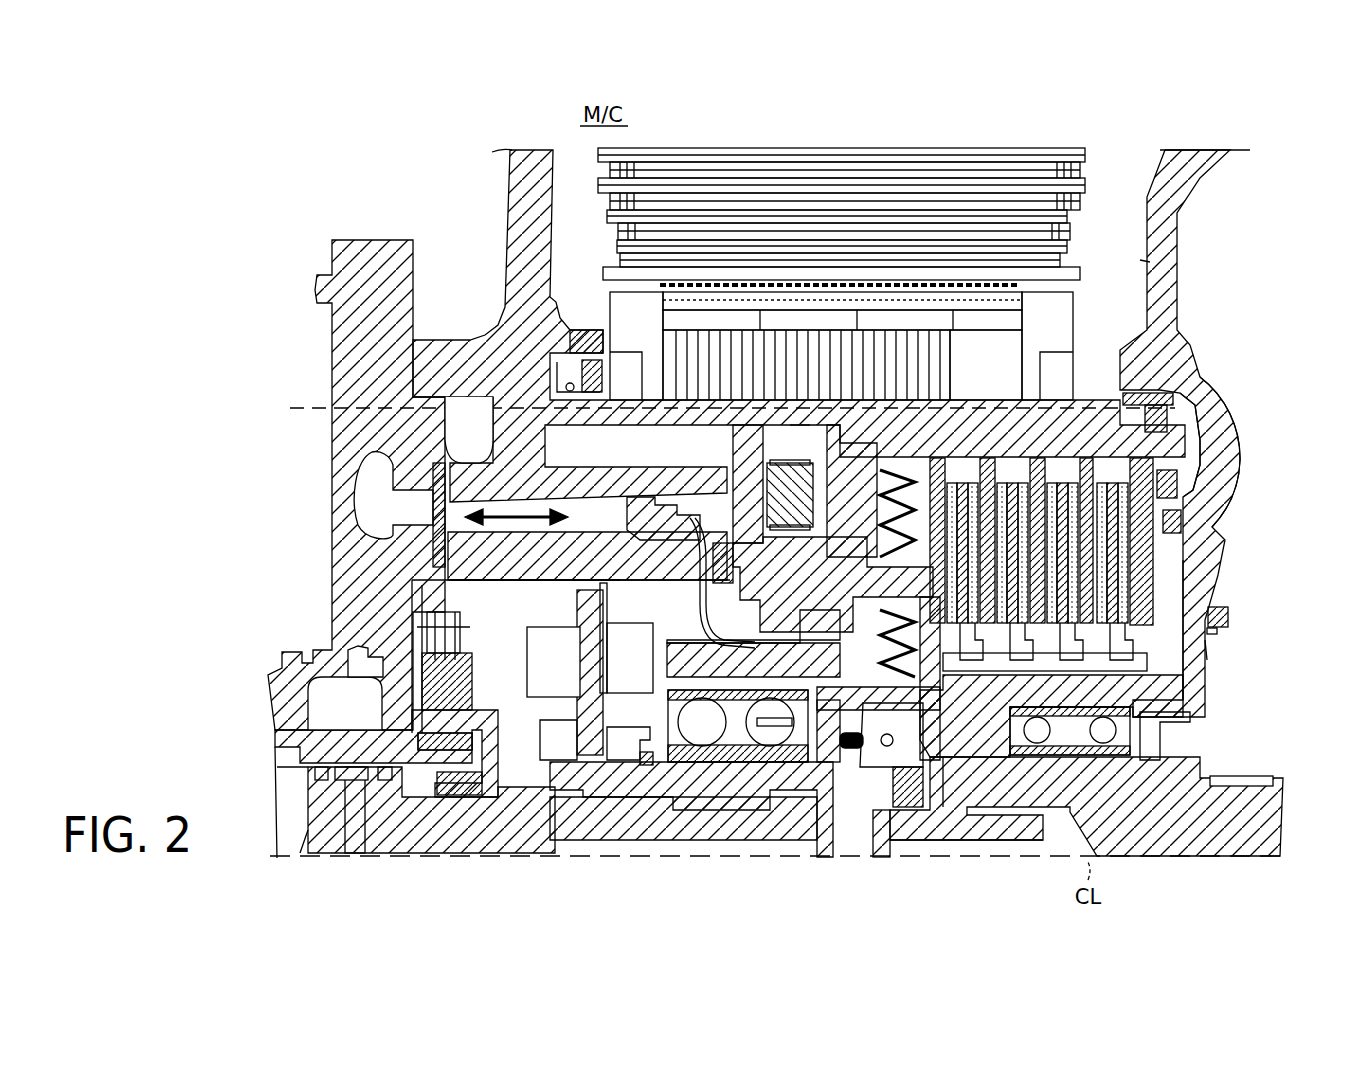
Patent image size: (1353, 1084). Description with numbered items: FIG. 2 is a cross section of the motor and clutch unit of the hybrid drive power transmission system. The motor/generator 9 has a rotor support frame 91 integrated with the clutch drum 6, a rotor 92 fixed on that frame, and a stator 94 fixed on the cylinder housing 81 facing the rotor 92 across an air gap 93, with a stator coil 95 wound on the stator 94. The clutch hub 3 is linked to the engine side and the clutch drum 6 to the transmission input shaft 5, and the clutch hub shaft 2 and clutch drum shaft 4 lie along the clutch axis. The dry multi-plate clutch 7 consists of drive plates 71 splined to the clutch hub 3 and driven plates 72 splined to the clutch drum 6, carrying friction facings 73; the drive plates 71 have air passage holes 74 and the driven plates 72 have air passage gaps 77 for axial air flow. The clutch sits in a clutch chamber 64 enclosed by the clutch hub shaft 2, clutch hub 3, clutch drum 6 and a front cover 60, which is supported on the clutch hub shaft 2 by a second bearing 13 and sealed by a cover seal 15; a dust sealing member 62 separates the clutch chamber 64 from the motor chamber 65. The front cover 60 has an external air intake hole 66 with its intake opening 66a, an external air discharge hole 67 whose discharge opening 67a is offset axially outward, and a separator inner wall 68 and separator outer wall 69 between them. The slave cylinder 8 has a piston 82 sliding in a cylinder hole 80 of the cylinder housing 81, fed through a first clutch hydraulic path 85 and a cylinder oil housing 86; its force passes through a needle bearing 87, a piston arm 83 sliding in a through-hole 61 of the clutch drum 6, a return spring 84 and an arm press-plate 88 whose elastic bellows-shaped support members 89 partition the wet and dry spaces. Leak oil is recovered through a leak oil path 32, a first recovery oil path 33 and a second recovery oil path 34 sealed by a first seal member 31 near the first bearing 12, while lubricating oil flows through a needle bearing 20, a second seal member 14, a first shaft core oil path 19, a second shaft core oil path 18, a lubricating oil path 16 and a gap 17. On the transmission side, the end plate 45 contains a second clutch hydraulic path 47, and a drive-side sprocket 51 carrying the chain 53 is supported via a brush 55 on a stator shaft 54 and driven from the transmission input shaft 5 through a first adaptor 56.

The clutch hub shaft 2 is at (1173, 825).
The clutch hub 3 is at (1183, 700).
The clutch drum shaft 4 is at (742, 780).
The transmission input shaft 5 is at (578, 815).
The clutch drum 6 is at (1065, 420).
The dry multi-plate clutch 7 is at (1118, 541).
The slave cylinder 8 is at (557, 583).
The motor/generator 9 is at (841, 227).
The first bearing 12 is at (702, 724).
The second bearing 13 is at (1103, 730).
The second seal member 14 is at (887, 748).
The cover seal 15 is at (1170, 748).
The lubricating oil path 16 is at (830, 740).
The gap 17 is at (945, 815).
The second shaft core oil path 18 is at (993, 842).
The first shaft core oil path 19 is at (490, 830).
The needle bearing 20 is at (905, 800).
The first seal member 31 is at (580, 340).
The leak oil path 32 is at (793, 425).
The first recovery oil path 33 is at (607, 425).
The second recovery oil path 34 is at (715, 411).
The end plate 45 is at (372, 352).
The second clutch hydraulic path 47 is at (355, 523).
The drive-side sprocket 51 is at (370, 688).
The chain 53 is at (425, 622).
The stator shaft 54 is at (308, 742).
The brush 55 is at (440, 742).
The first adaptor 56 is at (460, 780).
The front cover 60 is at (1163, 350).
The through-hole 61 is at (838, 548).
The dust sealing member 62 is at (1150, 410).
The clutch chamber 64 is at (1230, 613).
The motor chamber 65 is at (1107, 250).
The external air intake hole 66 is at (1193, 643).
The intake opening 66a is at (1207, 650).
The external air discharge hole 67 is at (1222, 470).
The discharge opening 67a is at (1240, 485).
The separator inner wall 68 is at (1172, 520).
The separator outer wall 69 is at (1215, 627).
The drive plate 71 is at (1120, 560).
The driven plate 72 is at (1090, 505).
The friction facing 73 is at (1107, 540).
The air passage holes 74 is at (1125, 648).
The air passage gaps 77 is at (1167, 485).
The cylinder hole 80 is at (712, 465).
The cylinder housing 81 is at (478, 557).
The piston 82 is at (560, 650).
The piston arm 83 is at (760, 580).
The return spring 84 is at (797, 460).
The first clutch hydraulic path 85 is at (533, 530).
The cylinder oil housing 86 is at (640, 510).
The needle bearing 87 is at (723, 568).
The arm press-plate 88 is at (910, 643).
The elastic bellows-shaped support member 89 is at (920, 540).
The rotor support frame 91 is at (627, 310).
The rotor 92 is at (803, 352).
The air gap 93 is at (862, 290).
The stator 94 is at (720, 100).
The stator coil 95 is at (1015, 158).